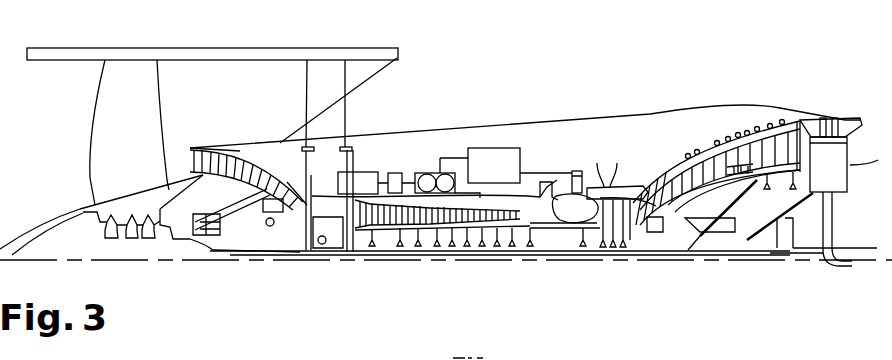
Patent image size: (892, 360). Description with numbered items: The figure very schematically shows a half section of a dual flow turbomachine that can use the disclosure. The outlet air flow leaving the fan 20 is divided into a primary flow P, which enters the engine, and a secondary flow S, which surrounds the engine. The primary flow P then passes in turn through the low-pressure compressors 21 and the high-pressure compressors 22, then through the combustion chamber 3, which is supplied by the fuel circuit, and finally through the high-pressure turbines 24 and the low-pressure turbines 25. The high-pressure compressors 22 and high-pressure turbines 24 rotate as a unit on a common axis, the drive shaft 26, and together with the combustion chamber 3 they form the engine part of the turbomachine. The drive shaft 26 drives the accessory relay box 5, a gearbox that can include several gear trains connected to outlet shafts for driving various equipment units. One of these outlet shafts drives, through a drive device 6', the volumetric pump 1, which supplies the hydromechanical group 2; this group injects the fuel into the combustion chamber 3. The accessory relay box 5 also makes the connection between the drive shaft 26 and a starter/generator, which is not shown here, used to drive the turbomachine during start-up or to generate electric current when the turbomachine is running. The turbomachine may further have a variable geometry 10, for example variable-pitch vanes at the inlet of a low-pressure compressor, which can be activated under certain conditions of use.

The volumetric pump 1 is at (428, 173).
The hydromechanical group 2 is at (490, 167).
The combustion chamber 3 is at (580, 158).
The accessory relay box 5 is at (370, 173).
The drive device 6' is at (402, 135).
The variable geometry 10 is at (199, 153).
The fan 20 is at (120, 107).
The low-pressure compressors 21 is at (250, 148).
The high-pressure compressors 22 is at (428, 270).
The high-pressure turbines 24 is at (664, 172).
The low-pressure turbines 25 is at (720, 124).
The drive shaft 26 is at (352, 250).
The secondary flow S is at (248, 113).
The primary flow P is at (167, 160).